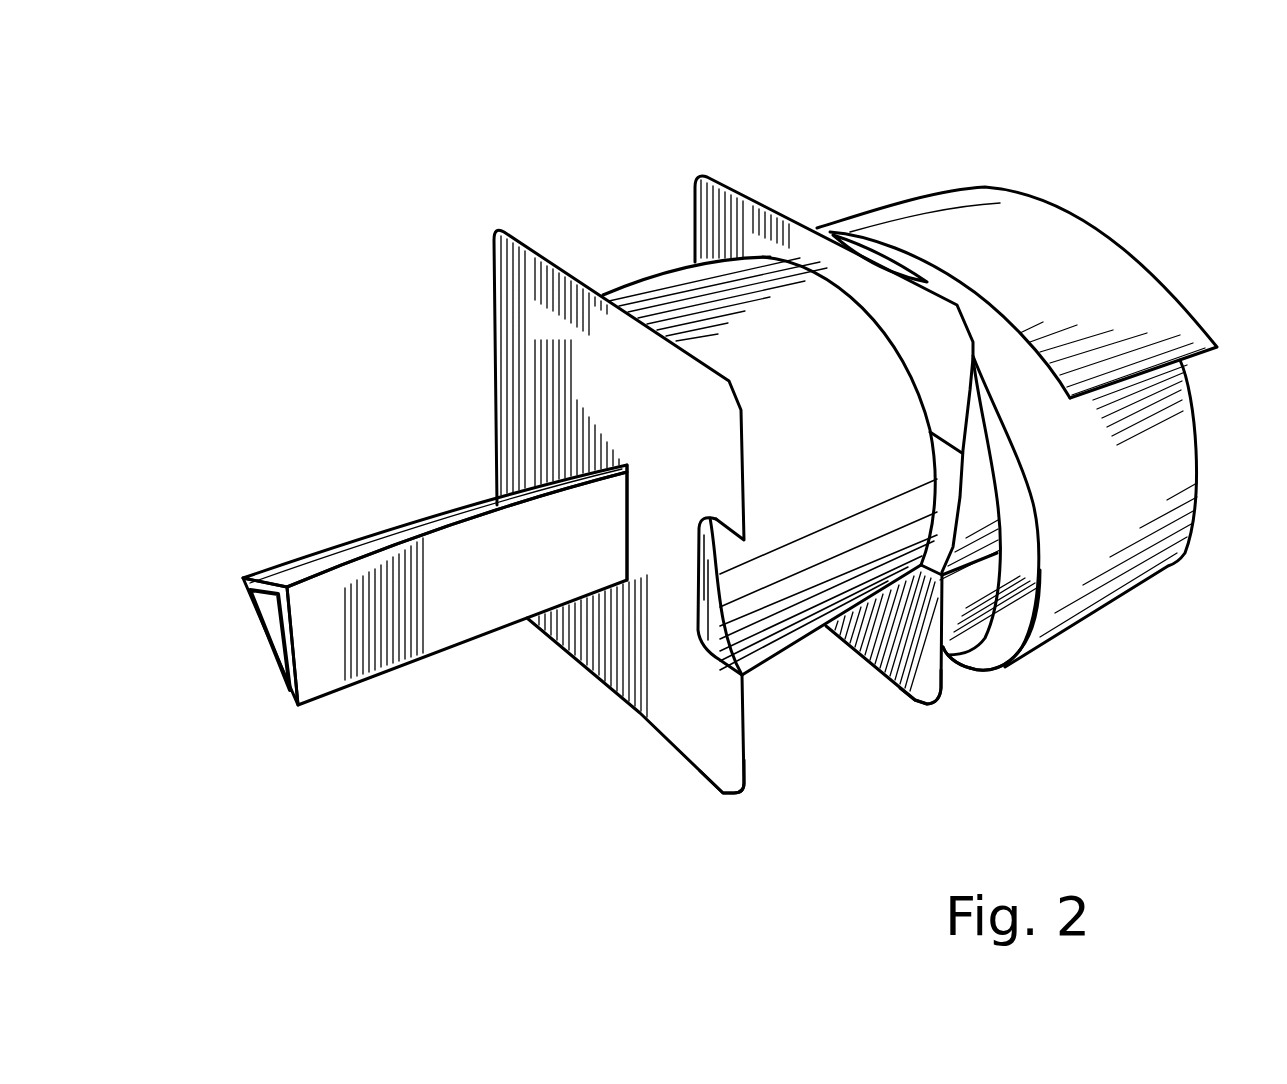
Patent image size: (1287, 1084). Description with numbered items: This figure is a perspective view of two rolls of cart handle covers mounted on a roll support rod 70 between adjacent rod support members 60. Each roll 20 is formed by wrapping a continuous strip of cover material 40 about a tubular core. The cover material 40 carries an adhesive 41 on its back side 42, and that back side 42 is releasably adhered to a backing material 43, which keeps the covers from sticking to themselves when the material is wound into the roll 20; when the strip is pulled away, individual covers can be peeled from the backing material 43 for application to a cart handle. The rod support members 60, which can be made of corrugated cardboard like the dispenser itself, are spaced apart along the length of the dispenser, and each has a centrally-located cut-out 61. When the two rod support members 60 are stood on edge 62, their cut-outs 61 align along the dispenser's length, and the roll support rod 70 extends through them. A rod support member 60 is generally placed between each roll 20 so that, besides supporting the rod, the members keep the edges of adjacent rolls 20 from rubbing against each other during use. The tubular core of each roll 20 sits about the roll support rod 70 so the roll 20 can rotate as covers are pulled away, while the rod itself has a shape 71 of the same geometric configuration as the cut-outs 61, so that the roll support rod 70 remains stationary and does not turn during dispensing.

The roll 20 is at (727, 313).
The cover material 40 is at (1133, 286).
The adhesive 41 is at (1018, 635).
The back side 42 is at (1003, 655).
The backing material 43 is at (967, 660).
The rod support member 60 is at (797, 245).
The cut-out 61 is at (627, 518).
The edge 62 is at (700, 768).
The roll support rod 70 is at (328, 672).
The shape 71 is at (268, 613).